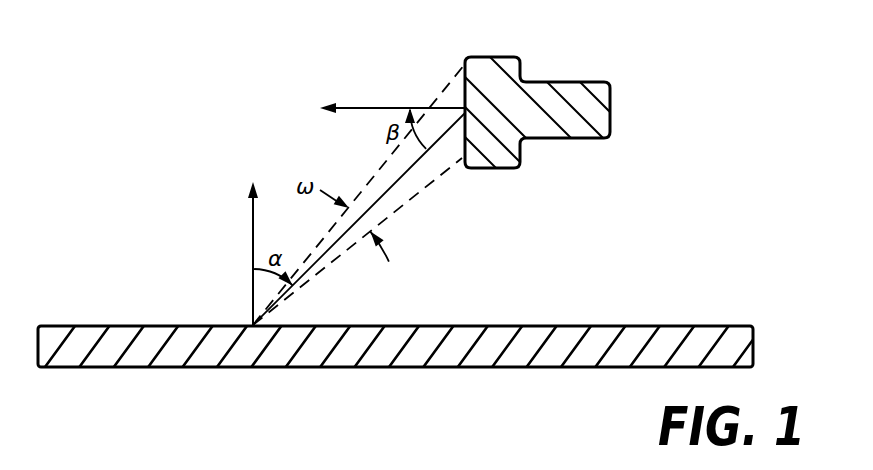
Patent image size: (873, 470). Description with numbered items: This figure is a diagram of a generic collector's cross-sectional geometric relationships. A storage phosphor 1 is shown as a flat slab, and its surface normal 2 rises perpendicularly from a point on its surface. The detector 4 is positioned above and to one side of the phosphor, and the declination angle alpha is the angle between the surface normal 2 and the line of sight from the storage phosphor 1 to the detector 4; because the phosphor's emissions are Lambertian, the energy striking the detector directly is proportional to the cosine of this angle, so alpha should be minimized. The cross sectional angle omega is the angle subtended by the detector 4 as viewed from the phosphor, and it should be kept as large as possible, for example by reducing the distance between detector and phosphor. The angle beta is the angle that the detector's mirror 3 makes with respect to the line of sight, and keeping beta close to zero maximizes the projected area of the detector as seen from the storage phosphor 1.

The storage phosphor 1 is at (411, 337).
The surface normal 2 is at (224, 256).
The detector's mirror 3 is at (394, 80).
The detector 4 is at (530, 127).